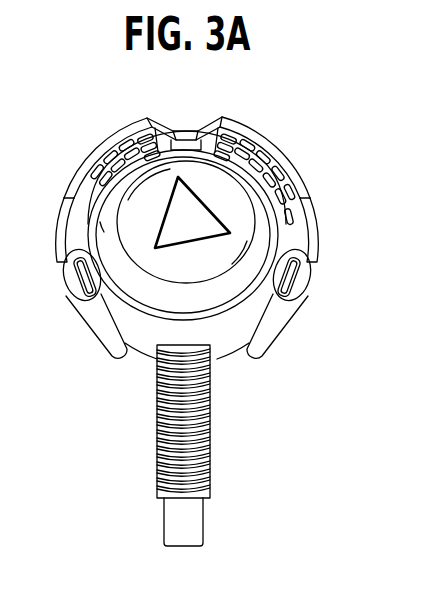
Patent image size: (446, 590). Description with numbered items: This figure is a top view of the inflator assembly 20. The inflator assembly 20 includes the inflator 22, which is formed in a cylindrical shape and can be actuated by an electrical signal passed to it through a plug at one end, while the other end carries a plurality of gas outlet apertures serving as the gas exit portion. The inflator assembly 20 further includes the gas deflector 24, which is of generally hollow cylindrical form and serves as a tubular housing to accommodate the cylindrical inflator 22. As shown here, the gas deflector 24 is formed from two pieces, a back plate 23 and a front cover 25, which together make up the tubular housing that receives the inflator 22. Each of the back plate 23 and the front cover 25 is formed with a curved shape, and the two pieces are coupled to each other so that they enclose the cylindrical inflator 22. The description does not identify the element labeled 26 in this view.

The inflator assembly 20 is at (262, 110).
The inflator 22 is at (98, 218).
The back plate 23 is at (214, 301).
The gas deflector 24 is at (241, 278).
The front cover 25 is at (305, 222).
The threaded shaft 26 is at (212, 404).